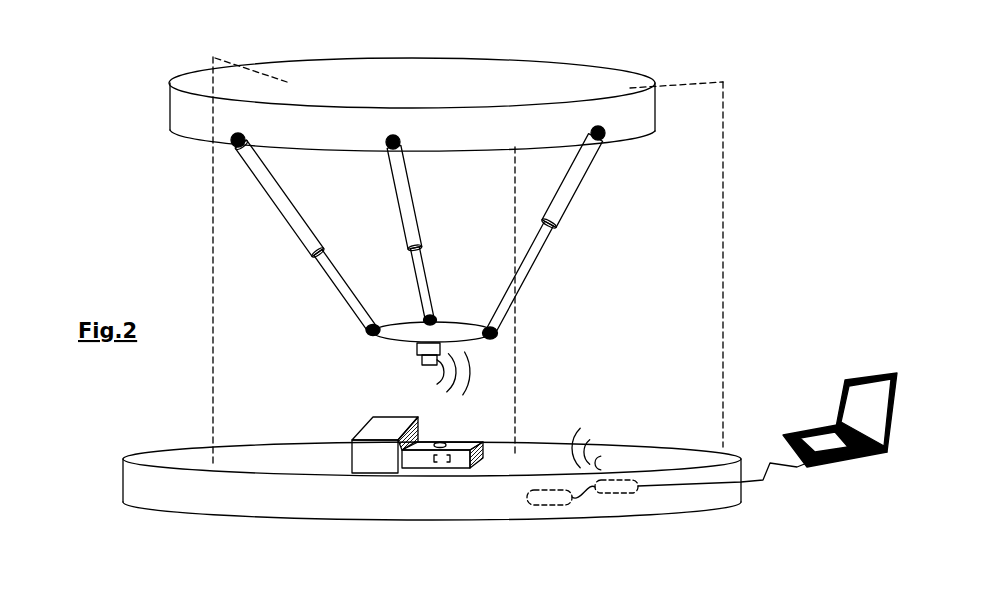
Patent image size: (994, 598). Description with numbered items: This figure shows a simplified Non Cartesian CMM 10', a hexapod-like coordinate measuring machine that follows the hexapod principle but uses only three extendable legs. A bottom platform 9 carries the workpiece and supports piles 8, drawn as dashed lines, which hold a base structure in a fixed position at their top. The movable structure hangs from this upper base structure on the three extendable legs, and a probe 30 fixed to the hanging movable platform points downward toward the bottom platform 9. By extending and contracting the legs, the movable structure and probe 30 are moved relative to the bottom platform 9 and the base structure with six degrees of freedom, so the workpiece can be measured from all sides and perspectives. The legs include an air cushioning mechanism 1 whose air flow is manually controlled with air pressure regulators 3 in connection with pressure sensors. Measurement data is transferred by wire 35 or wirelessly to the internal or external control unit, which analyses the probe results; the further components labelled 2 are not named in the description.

The air cushioning mechanism 1 is at (382, 75).
The component / arm 2 is at (391, 352).
The air pressure regulators 3 is at (478, 385).
The piles 8 is at (213, 262).
The bottom platform 9 is at (145, 485).
The Non Cartesian CMM 10' is at (395, 295).
The probe 30 is at (428, 366).
The wire 35 is at (768, 460).